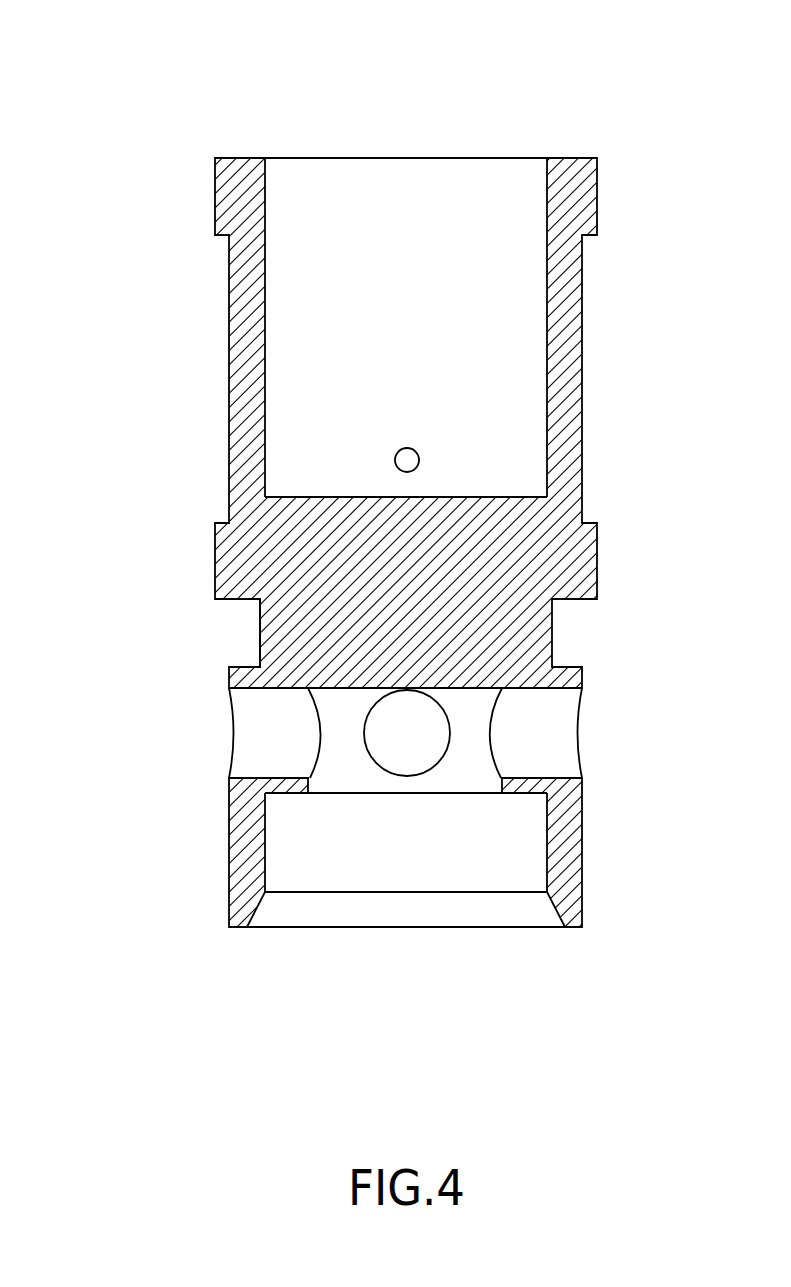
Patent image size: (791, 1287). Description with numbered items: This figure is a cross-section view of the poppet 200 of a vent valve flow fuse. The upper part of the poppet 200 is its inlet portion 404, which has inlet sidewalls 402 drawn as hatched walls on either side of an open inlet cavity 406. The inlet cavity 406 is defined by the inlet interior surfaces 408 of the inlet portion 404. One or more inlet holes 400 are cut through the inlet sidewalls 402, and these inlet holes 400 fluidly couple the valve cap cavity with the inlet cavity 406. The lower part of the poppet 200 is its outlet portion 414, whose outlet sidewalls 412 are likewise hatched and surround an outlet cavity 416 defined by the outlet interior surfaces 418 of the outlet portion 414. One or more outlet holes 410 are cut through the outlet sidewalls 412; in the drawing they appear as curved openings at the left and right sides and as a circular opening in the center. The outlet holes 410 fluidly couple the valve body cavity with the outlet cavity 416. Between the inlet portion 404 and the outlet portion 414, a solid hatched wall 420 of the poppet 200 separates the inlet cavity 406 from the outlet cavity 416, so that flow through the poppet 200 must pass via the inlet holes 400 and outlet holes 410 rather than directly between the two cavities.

The poppet 200 is at (152, 45).
The inlet holes 400 is at (410, 458).
The inlet sidewalls 402 is at (247, 355).
The inlet portion 404 is at (219, 278).
The inlet cavity 406 is at (299, 199).
The inlet interior surfaces 408 is at (539, 175).
The outlet holes 410 is at (248, 735).
The outlet sidewalls 412 is at (245, 828).
The outlet portion 414 is at (221, 882).
The outlet cavity 416 is at (298, 871).
The outlet interior surfaces 418 is at (538, 900).
The wall 420 is at (272, 655).